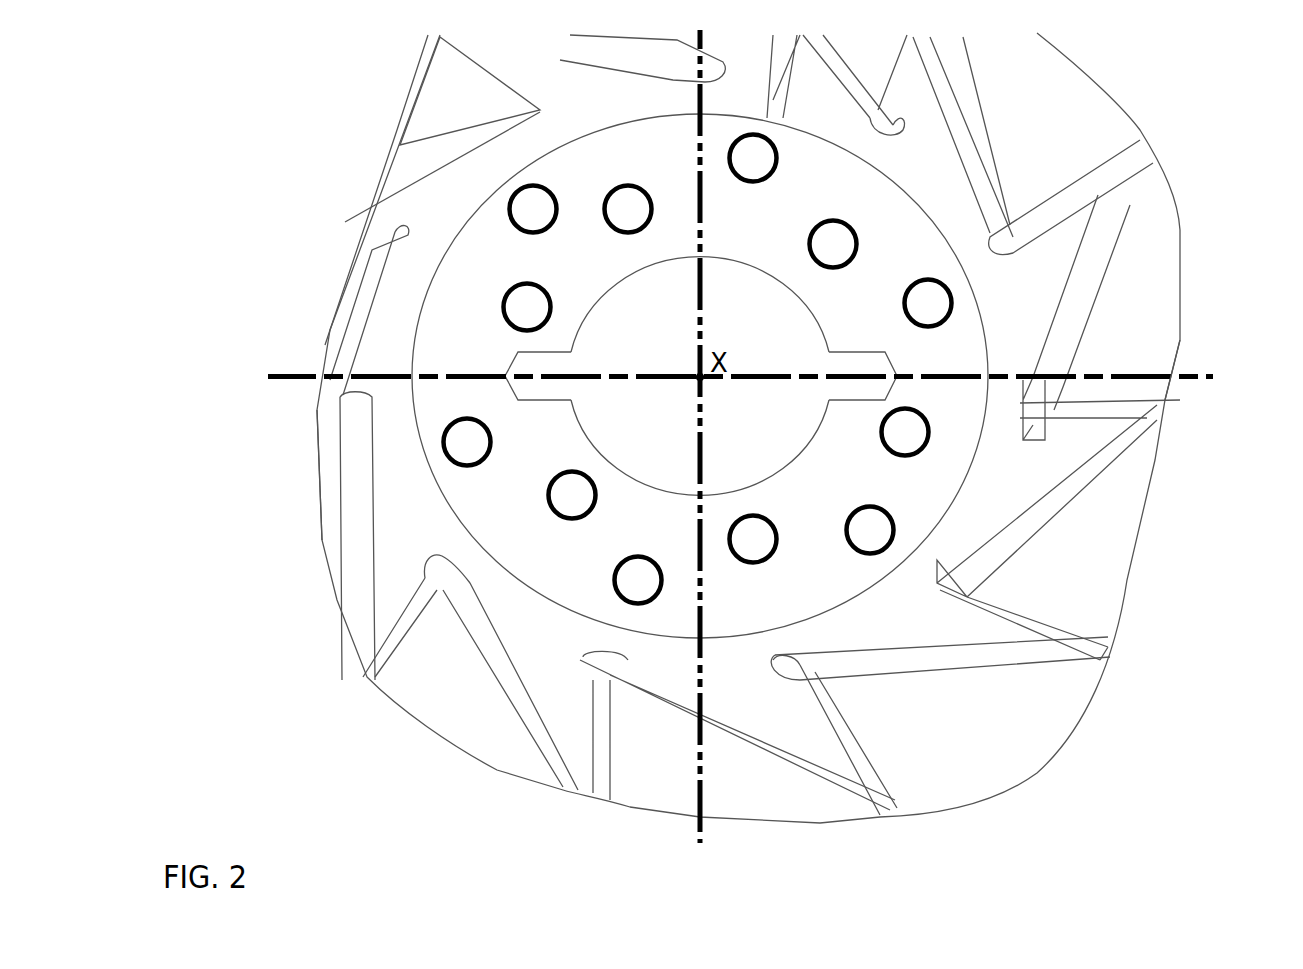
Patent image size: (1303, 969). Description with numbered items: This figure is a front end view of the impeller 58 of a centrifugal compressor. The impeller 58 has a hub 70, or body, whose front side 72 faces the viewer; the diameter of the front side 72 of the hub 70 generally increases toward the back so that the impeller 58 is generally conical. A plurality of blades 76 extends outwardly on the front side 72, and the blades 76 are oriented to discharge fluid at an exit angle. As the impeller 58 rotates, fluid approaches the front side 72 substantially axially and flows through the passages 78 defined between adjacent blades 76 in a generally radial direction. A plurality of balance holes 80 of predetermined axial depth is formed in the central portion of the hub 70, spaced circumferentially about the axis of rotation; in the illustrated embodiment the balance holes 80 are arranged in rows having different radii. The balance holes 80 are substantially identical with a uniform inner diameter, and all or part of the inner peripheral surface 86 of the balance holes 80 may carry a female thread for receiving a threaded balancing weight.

The impeller 58 is at (748, 428).
The hub 70 is at (948, 450).
The front side 72 is at (397, 519).
The blades 76 is at (1060, 510).
The passages 78 is at (1155, 323).
The balance holes 80 is at (528, 212).
The inner peripheral surface 86 is at (463, 438).